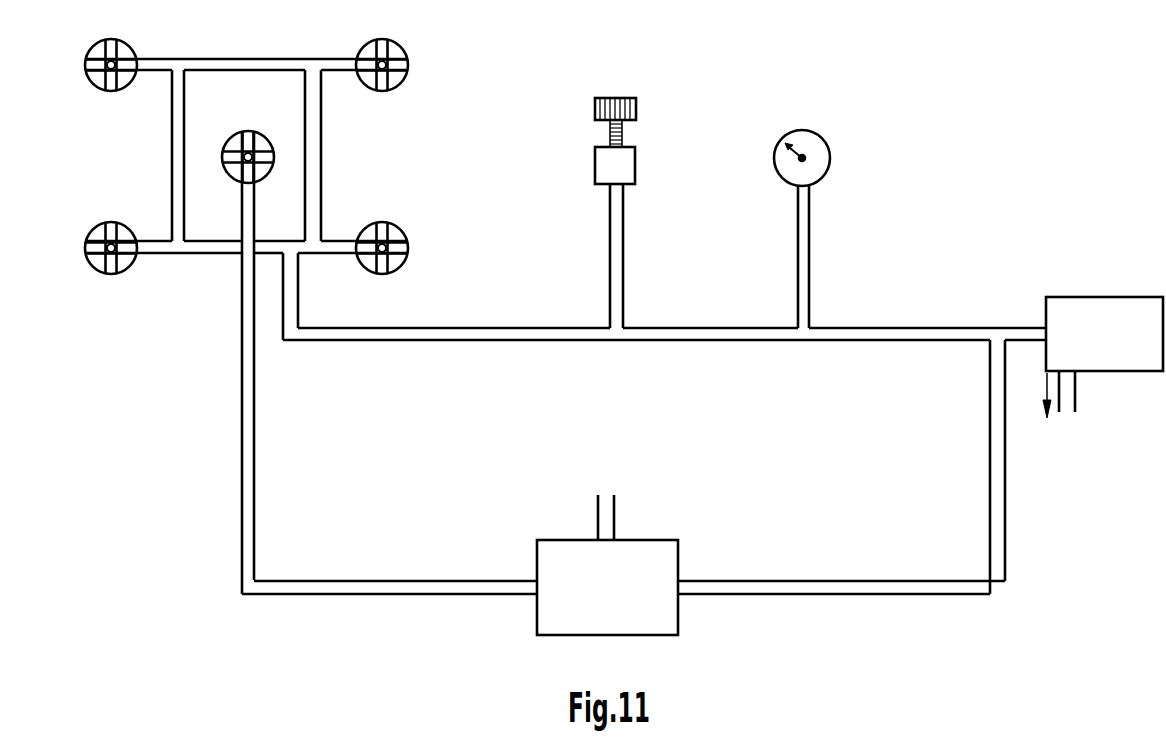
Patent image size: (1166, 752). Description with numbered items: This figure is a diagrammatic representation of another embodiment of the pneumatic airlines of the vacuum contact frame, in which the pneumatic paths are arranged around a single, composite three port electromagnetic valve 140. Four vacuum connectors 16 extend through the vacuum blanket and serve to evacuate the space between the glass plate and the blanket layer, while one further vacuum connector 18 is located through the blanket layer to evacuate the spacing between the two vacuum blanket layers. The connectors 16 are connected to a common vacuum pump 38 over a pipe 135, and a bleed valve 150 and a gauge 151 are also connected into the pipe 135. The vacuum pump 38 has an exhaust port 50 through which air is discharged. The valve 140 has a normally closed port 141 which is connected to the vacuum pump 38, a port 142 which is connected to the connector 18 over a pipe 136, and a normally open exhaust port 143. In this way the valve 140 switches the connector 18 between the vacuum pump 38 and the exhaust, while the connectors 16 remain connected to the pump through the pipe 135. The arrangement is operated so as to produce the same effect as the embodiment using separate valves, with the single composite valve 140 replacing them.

The vacuum connectors 16 is at (83, 72).
The vacuum connector 18 is at (274, 153).
The vacuum pump 38 is at (1114, 297).
The exhaust port 50 is at (1075, 390).
The pipe 135 is at (433, 340).
The pipe 136 is at (255, 512).
The composite three port electromagnetic valve 140 is at (678, 634).
The normally closed port 141 is at (718, 580).
The port 142 is at (530, 595).
The normally open exhaust port 143 is at (597, 517).
The bleed valve 150 is at (636, 170).
The gauge 151 is at (828, 142).